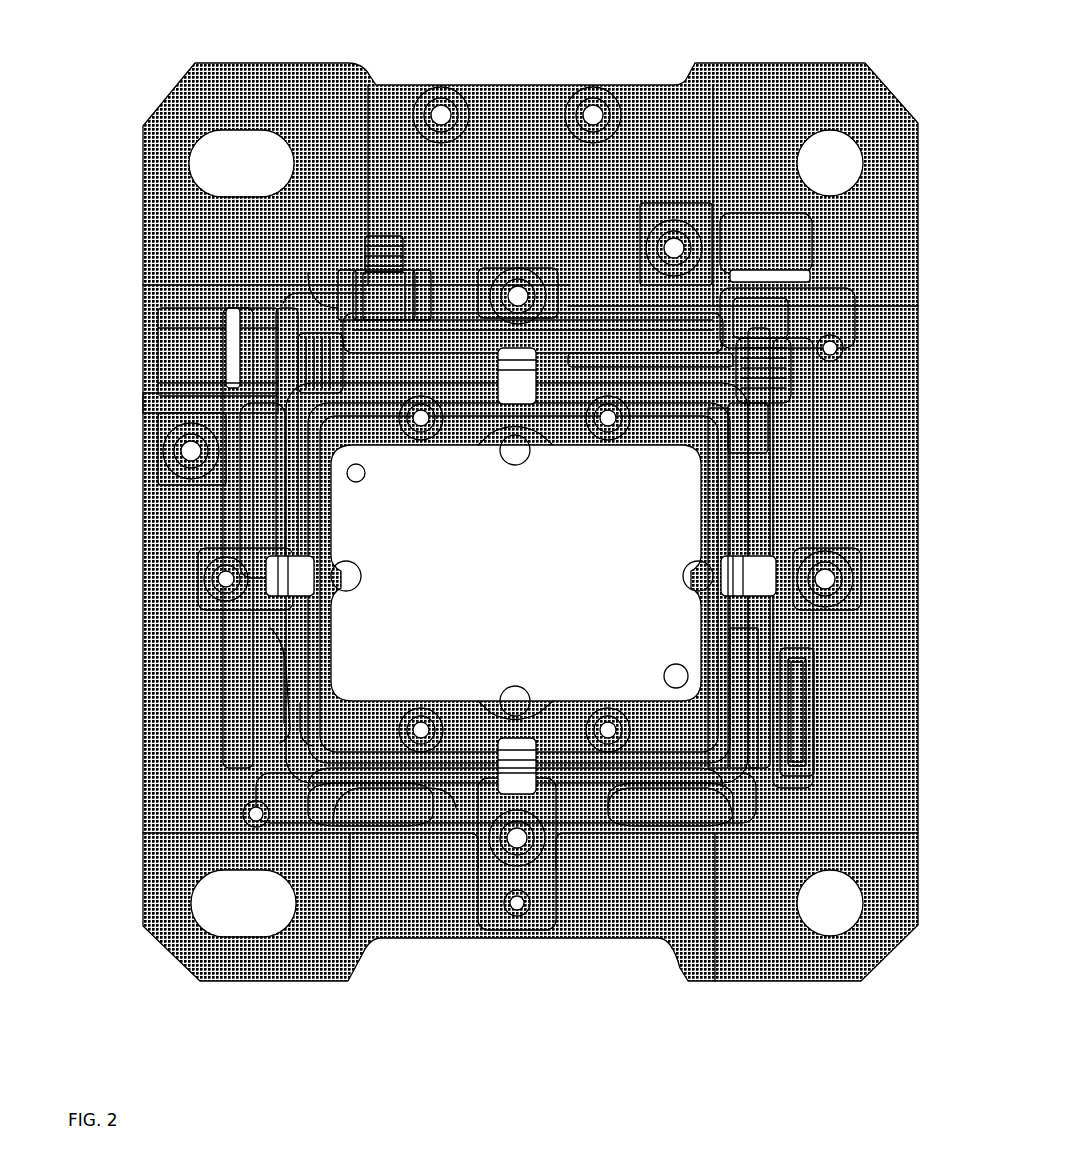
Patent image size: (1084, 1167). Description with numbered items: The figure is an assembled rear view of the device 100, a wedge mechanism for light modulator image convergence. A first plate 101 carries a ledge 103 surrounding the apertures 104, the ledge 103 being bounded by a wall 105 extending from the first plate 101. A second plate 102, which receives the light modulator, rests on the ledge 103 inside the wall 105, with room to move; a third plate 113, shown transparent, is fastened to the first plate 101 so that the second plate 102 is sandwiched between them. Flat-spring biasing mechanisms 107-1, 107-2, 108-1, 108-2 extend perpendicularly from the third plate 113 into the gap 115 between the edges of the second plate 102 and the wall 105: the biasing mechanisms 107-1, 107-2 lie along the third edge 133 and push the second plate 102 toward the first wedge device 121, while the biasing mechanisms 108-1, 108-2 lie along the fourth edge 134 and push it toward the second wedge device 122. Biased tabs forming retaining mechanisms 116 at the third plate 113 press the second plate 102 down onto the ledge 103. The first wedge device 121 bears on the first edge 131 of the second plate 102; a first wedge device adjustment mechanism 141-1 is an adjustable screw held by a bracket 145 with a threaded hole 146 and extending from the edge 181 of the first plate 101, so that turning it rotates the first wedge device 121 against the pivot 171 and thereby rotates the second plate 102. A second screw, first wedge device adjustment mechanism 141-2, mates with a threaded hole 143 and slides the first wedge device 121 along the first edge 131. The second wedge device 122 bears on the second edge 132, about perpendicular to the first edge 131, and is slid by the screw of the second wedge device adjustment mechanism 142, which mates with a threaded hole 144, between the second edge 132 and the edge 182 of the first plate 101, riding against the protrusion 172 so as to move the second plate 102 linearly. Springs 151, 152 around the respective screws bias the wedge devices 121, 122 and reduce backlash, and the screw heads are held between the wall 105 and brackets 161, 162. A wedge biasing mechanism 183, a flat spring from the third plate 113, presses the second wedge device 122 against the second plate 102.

The device 100 is at (880, 52).
The first plate 101 is at (190, 75).
The second plate 102 is at (357, 470).
The ledge 103 is at (278, 488).
The apertures 104 is at (480, 578).
The wall 105 is at (250, 516).
The biasing mechanism 107-1 is at (345, 780).
The biasing mechanism 107-2 is at (668, 785).
The biasing mechanism 108-1 is at (280, 455).
The biasing mechanism 108-2 is at (268, 675).
The third plate 113 is at (517, 583).
The gap 115 is at (315, 797).
The retaining mechanisms 116 is at (510, 372).
The first wedge device 121 is at (348, 340).
The second wedge device 122 is at (768, 462).
The first edge 131 is at (655, 350).
The second edge 132 is at (748, 645).
The third edge 133 is at (345, 770).
The fourth edge 134 is at (285, 705).
The first wedge device adjustment mechanism 141-1 is at (388, 318).
The first wedge device adjustment mechanism 141-2 is at (245, 355).
The second wedge device adjustment mechanism 142 is at (762, 300).
The threaded hole 143 is at (398, 350).
The threaded hole 144 is at (768, 418).
The bracket 145 is at (335, 258).
The threaded hole 146 is at (398, 300).
The spring 151 is at (280, 318).
The spring 152 is at (772, 385).
The bracket 161 is at (222, 330).
The bracket 162 is at (755, 272).
The pivot 171 is at (652, 325).
The protrusion 172 is at (780, 585).
The edge 181 is at (620, 322).
The edge 182 is at (780, 538).
The wedge biasing mechanism 183 is at (787, 715).